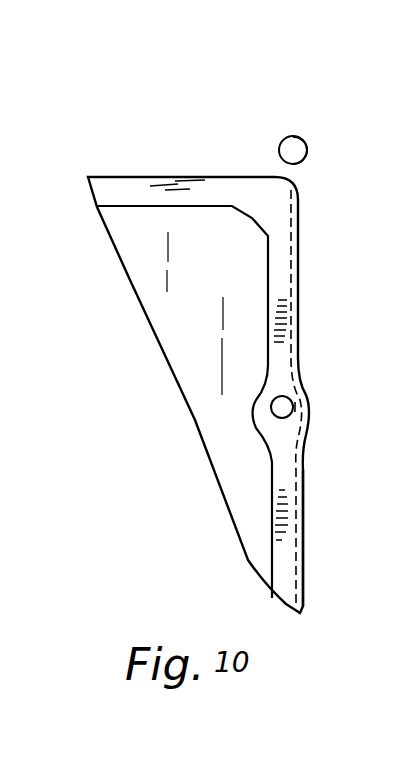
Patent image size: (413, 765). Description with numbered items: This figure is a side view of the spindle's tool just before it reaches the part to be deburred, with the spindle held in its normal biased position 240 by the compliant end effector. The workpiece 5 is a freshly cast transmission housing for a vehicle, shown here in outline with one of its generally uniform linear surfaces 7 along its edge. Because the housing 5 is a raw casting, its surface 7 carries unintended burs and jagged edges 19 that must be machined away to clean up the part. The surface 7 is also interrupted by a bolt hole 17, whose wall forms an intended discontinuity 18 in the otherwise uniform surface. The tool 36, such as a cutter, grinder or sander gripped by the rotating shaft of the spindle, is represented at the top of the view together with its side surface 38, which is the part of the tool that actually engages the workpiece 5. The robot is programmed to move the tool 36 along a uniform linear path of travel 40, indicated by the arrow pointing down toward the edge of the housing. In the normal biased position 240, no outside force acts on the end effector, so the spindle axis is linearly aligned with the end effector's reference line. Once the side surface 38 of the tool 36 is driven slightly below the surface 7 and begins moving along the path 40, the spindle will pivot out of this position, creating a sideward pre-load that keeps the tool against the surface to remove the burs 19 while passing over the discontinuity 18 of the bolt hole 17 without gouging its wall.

The workpiece 5 is at (178, 173).
The linear surface 7 is at (301, 252).
The bolt hole 17 is at (284, 405).
The intended discontinuity 18 is at (300, 407).
The burs and jagged edges 19 is at (304, 486).
The linear path of travel 40 is at (293, 137).
The tool 36 is at (306, 142).
The side surface of the tool 38 is at (307, 150).
The normal biased position 240 is at (300, 163).